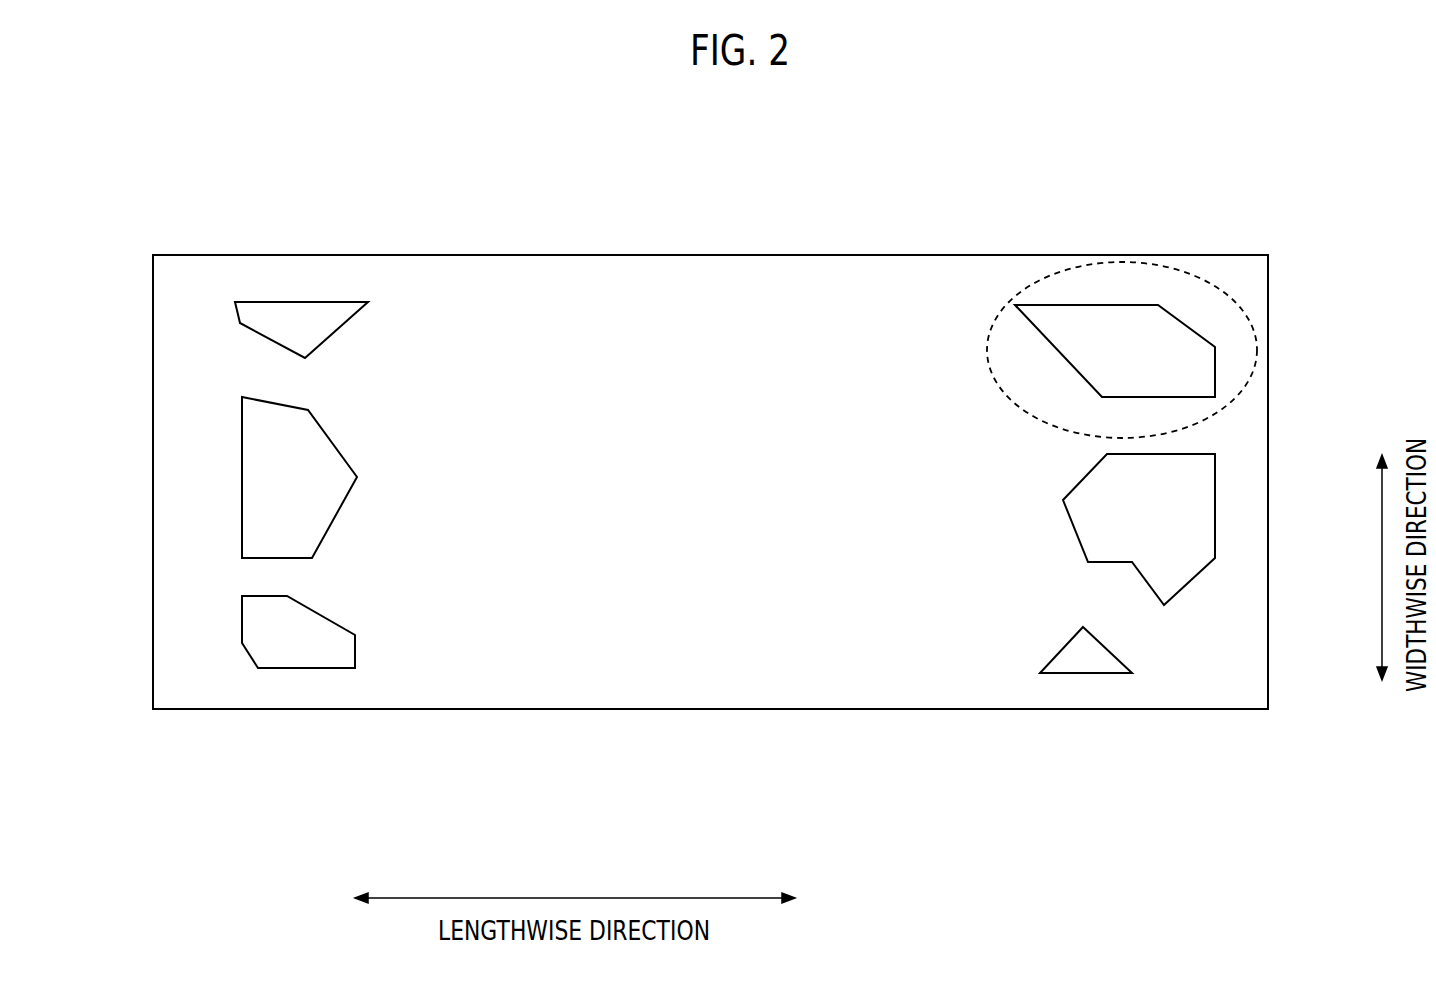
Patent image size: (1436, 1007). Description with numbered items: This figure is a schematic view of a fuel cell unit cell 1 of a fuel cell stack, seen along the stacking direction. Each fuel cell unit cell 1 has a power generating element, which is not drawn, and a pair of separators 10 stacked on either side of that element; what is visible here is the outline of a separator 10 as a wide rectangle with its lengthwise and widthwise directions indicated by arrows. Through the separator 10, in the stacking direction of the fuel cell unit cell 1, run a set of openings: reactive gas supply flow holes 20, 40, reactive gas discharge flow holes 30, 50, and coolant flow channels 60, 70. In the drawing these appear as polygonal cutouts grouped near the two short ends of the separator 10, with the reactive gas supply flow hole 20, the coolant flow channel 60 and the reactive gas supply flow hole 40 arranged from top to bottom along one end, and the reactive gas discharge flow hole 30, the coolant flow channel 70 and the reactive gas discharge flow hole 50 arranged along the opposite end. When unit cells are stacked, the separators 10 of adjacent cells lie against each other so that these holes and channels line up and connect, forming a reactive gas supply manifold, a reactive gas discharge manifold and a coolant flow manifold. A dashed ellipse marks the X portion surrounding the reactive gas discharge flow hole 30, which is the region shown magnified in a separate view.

The fuel cell unit cell 1 is at (554, 214).
The separator 10 is at (805, 278).
The reactive gas supply flow hole 20 is at (278, 323).
The reactive gas discharge flow hole 30 is at (1075, 327).
The reactive gas supply flow hole 40 is at (298, 640).
The reactive gas discharge flow hole 50 is at (1098, 660).
The coolant flow channel 60 is at (270, 492).
The coolant flow channel 70 is at (1170, 553).
The X portion X is at (1208, 288).